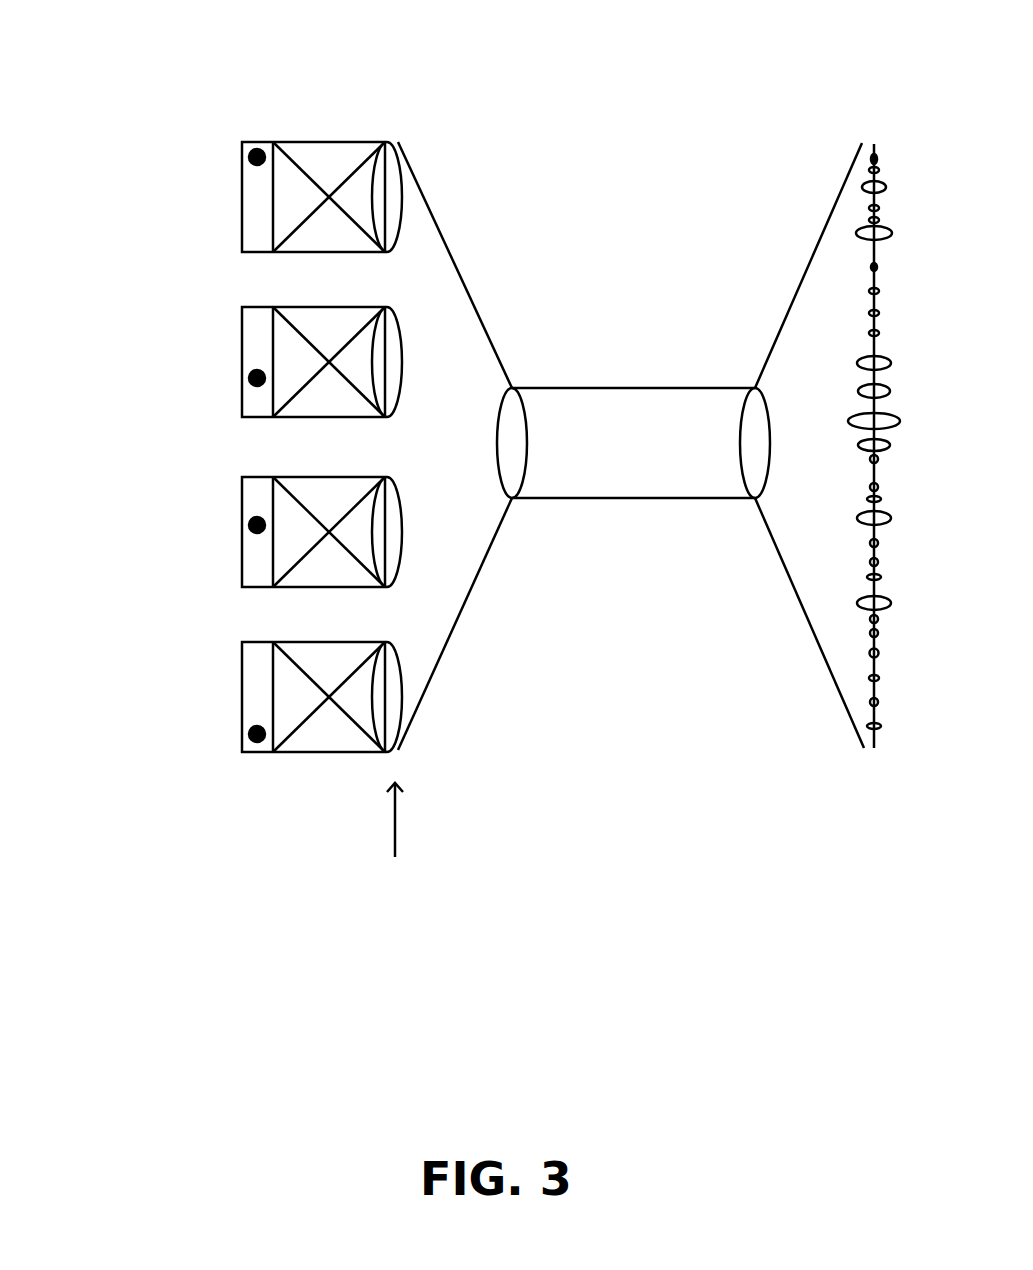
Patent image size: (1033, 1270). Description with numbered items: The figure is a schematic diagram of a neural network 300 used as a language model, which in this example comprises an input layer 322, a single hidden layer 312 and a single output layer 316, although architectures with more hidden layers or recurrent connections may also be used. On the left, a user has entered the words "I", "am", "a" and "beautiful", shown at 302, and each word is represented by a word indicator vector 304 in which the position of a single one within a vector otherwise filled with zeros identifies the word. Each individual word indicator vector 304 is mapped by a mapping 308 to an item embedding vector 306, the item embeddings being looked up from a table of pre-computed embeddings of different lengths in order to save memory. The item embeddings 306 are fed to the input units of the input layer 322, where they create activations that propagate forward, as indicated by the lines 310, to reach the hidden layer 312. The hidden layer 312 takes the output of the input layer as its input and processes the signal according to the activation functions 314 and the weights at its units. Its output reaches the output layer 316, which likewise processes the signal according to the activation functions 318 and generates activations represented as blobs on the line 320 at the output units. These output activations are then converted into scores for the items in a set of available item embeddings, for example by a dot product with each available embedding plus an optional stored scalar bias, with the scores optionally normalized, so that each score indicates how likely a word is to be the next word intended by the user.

The neural network 300 is at (583, 770).
The input words 302 is at (172, 200).
The word indicator vector 304 is at (256, 142).
The item embedding vector 306 is at (388, 147).
The mapping 308 is at (315, 142).
The lines 310 is at (457, 258).
The hidden layer 312 is at (515, 388).
The activation functions 314 is at (570, 525).
The output layer 316 is at (752, 388).
The activation functions 318 is at (710, 525).
The line 320 is at (878, 170).
The input layer 322 is at (392, 833).